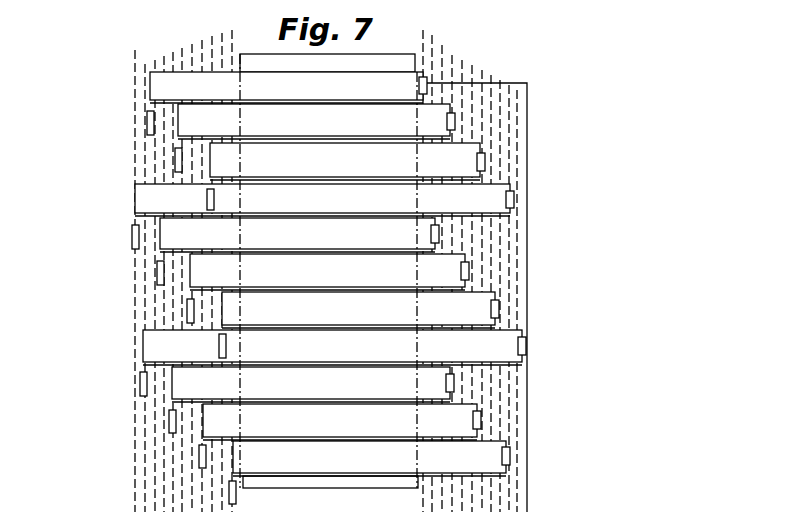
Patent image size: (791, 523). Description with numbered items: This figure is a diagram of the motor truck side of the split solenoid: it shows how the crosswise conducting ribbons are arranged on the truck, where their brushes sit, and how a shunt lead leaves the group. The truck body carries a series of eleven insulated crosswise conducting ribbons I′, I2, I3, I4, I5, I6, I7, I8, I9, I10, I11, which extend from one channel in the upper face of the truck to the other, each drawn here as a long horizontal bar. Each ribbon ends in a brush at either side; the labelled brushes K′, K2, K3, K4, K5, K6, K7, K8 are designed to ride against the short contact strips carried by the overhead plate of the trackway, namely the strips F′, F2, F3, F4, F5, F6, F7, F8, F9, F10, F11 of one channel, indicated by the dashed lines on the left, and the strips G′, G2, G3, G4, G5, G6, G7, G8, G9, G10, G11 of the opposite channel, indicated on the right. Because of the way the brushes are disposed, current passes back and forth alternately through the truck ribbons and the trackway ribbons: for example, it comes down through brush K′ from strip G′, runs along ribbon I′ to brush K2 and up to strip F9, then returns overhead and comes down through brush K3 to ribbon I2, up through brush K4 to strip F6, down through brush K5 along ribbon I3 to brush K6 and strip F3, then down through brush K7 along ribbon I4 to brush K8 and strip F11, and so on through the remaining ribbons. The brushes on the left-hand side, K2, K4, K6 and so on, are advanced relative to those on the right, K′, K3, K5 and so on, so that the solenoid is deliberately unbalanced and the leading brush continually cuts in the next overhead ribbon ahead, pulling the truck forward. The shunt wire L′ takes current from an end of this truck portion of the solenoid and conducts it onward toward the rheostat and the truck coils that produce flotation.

The contact strip F′ is at (232, 30).
The contact strip F2 is at (222, 34).
The contact strip F3 is at (212, 37).
The contact strip F4 is at (202, 41).
The contact strip F5 is at (192, 45).
The contact strip F6 is at (182, 50).
The contact strip F7 is at (173, 55).
The contact strip F8 is at (164, 140).
The contact strip F9 is at (155, 150).
The contact strip F10 is at (145, 160).
The contact strip F11 is at (135, 262).
The contact strip G′ is at (423, 42).
The contact strip G2 is at (432, 50).
The contact strip G3 is at (442, 60).
The contact strip G4 is at (452, 72).
The contact strip G5 is at (462, 97).
The contact strip G6 is at (472, 107).
The contact strip G7 is at (482, 128).
The contact strip G8 is at (491, 143).
The contact strip G9 is at (500, 173).
The contact strip G10 is at (509, 223).
The contact strip G11 is at (517, 247).
The crosswise conducting ribbon I′ is at (286, 87).
The crosswise conducting ribbon I2 is at (314, 121).
The crosswise conducting ribbon I3 is at (345, 161).
The crosswise conducting ribbon I4 is at (322, 200).
The crosswise conducting ribbon I5 is at (297, 235).
The crosswise conducting ribbon I6 is at (327, 272).
The crosswise conducting ribbon I7 is at (358, 310).
The crosswise conducting ribbon I8 is at (332, 347).
The crosswise conducting ribbon I9 is at (311, 384).
The crosswise conducting ribbon I10 is at (340, 422).
The crosswise conducting ribbon I11 is at (369, 458).
The contact brush K′ is at (418, 85).
The contact brush K2 is at (152, 112).
The contact brush K3 is at (447, 121).
The contact brush K4 is at (181, 150).
The contact brush K5 is at (477, 163).
The contact brush K6 is at (214, 192).
The contact brush K7 is at (506, 199).
The contact brush K8 is at (138, 227).
The shunt wire L′ is at (530, 400).